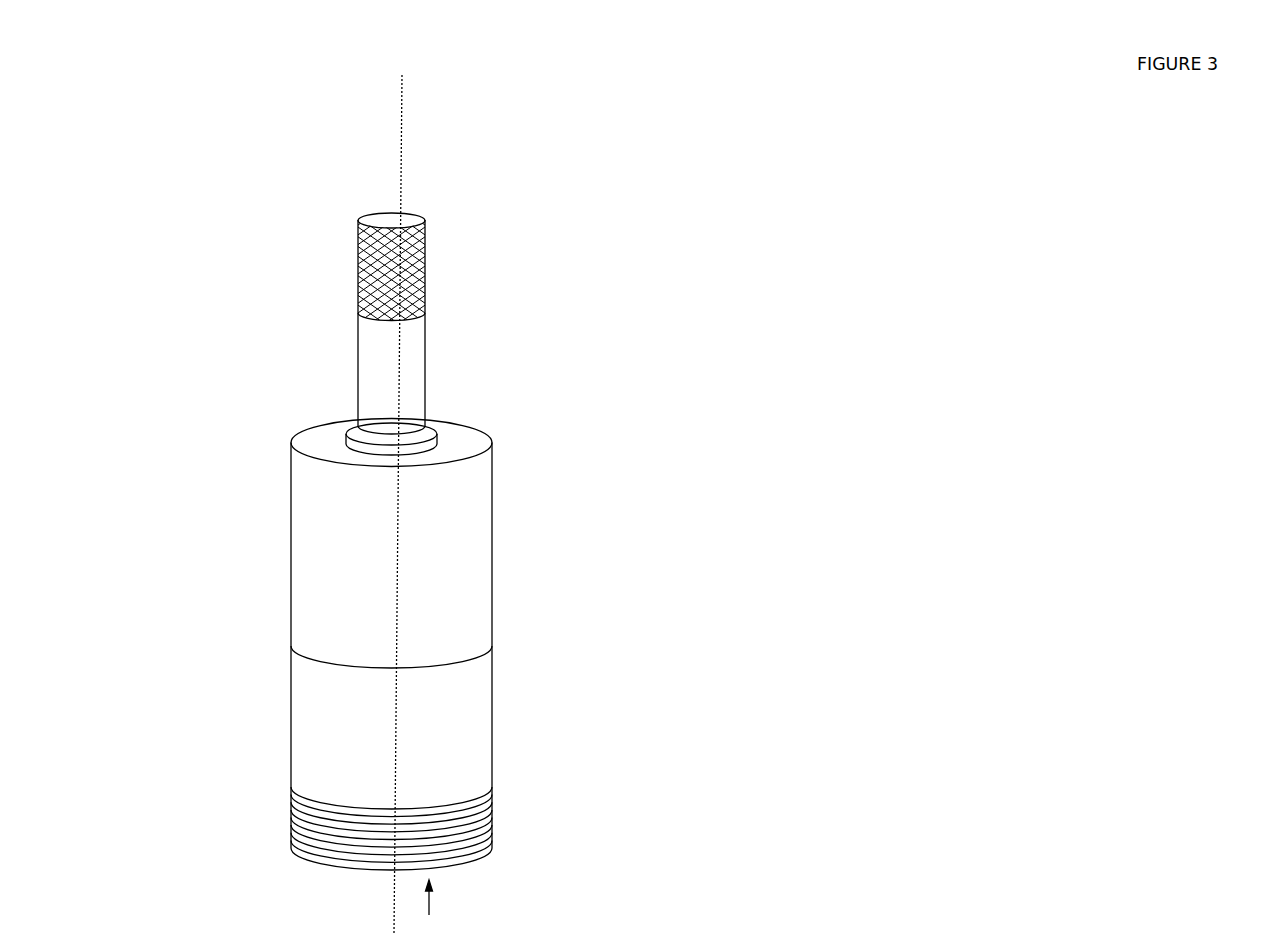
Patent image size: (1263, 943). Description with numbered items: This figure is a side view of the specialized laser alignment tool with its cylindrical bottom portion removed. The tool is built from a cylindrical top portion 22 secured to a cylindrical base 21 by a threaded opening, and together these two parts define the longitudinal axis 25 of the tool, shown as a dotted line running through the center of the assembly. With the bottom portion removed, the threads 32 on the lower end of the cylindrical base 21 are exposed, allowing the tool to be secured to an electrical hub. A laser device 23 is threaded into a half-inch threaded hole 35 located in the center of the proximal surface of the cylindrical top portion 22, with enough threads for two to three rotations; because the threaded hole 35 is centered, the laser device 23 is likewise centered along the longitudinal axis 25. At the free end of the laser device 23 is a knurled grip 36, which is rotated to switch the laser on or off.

The longitudinal axis 25 is at (345, 80).
The laser device 23 is at (402, 193).
The knurled grip 36 is at (435, 229).
The threaded hole 35 is at (453, 427).
The cylindrical top portion 22 is at (508, 533).
The cylindrical base 21 is at (517, 692).
The threads 32 is at (513, 811).